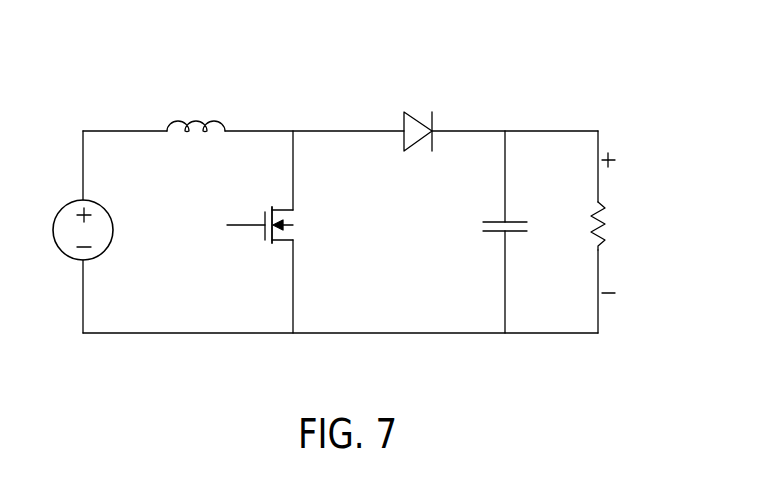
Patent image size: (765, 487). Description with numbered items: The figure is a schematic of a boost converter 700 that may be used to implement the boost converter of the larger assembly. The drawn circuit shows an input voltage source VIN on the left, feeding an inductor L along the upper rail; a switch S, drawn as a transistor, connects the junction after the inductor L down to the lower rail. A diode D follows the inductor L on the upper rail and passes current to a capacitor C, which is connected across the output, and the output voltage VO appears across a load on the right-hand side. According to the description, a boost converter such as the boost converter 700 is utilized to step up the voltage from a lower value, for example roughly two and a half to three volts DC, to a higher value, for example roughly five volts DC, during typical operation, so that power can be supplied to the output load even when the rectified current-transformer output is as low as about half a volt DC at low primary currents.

The boost converter 700 is at (575, 70).
The input voltage source VIN is at (67, 230).
The inductor L is at (196, 113).
The switch (MOSFET) S is at (268, 225).
The diode D is at (418, 118).
The output capacitor C is at (513, 227).
The output voltage / load VO is at (607, 223).